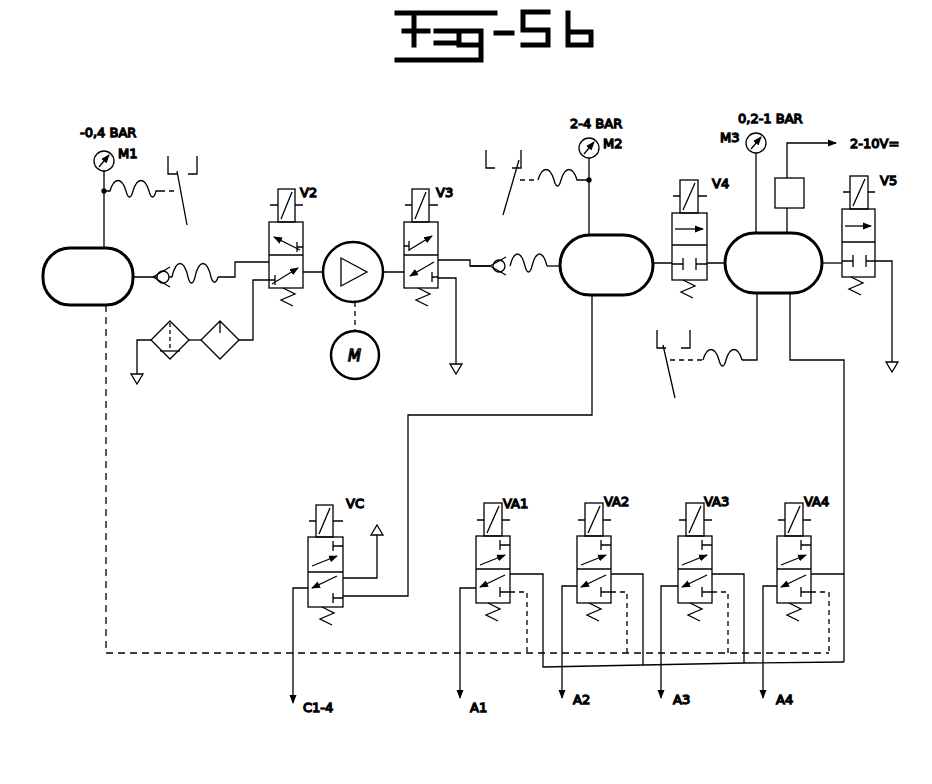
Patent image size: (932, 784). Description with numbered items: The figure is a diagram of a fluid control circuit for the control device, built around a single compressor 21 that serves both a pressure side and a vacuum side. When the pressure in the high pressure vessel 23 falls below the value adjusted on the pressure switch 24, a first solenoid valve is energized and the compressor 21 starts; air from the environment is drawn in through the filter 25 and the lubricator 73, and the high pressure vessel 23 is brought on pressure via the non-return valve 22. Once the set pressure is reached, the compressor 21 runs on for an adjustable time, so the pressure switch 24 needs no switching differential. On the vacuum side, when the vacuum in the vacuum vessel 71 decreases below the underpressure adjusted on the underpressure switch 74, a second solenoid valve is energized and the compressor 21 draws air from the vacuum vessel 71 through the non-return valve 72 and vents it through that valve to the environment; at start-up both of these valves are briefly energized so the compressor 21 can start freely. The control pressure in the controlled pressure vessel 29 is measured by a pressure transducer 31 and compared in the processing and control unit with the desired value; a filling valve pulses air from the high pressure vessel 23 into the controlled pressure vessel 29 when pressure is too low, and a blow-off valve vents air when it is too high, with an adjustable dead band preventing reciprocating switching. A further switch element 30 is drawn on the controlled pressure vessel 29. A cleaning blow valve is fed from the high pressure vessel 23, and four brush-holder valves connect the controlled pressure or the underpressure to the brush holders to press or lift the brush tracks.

The compressor 21 is at (345, 248).
The non-return valve 22 is at (527, 270).
The high pressure vessel 23 is at (614, 245).
The pressure switch 24 is at (552, 182).
The filter 25 is at (176, 359).
The controlled pressure vessel 29 is at (807, 276).
The pressure switch 30 is at (722, 362).
The pressure transducer 31 is at (804, 191).
The vacuum vessel 71 is at (83, 305).
The non-return valve 72 is at (200, 280).
The lubricator 73 is at (230, 356).
The underpressure switch 74 is at (135, 193).